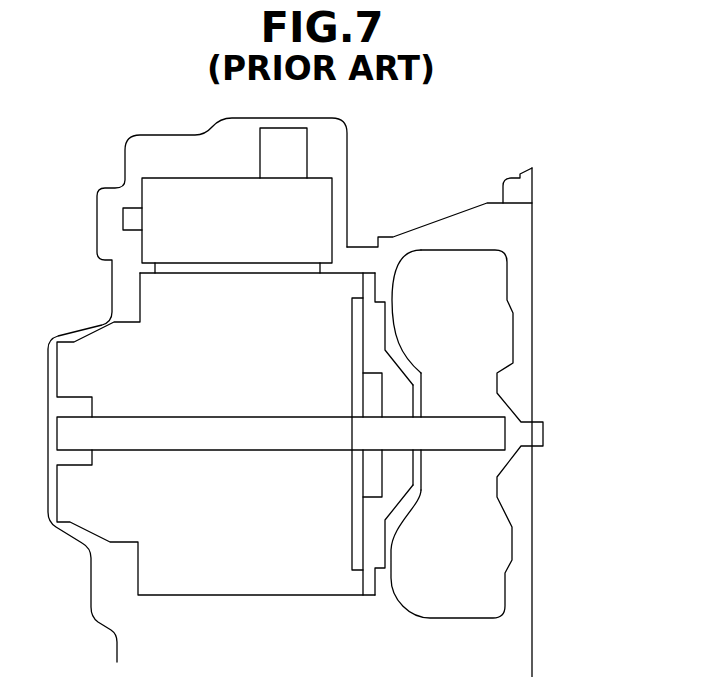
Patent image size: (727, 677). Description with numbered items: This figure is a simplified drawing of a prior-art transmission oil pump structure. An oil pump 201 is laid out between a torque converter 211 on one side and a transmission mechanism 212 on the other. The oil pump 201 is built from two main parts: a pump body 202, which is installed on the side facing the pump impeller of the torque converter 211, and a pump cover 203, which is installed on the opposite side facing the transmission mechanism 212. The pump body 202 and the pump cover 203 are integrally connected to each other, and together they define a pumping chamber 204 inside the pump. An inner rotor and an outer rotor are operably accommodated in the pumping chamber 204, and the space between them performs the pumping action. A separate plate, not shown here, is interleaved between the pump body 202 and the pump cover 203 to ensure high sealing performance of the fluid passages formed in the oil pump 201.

The oil pump 201 is at (371, 243).
The pump body 202 is at (400, 395).
The pump cover 203 is at (357, 543).
The pumping chamber 204 is at (372, 370).
The torque converter 211 is at (495, 278).
The transmission mechanism 212 is at (100, 346).